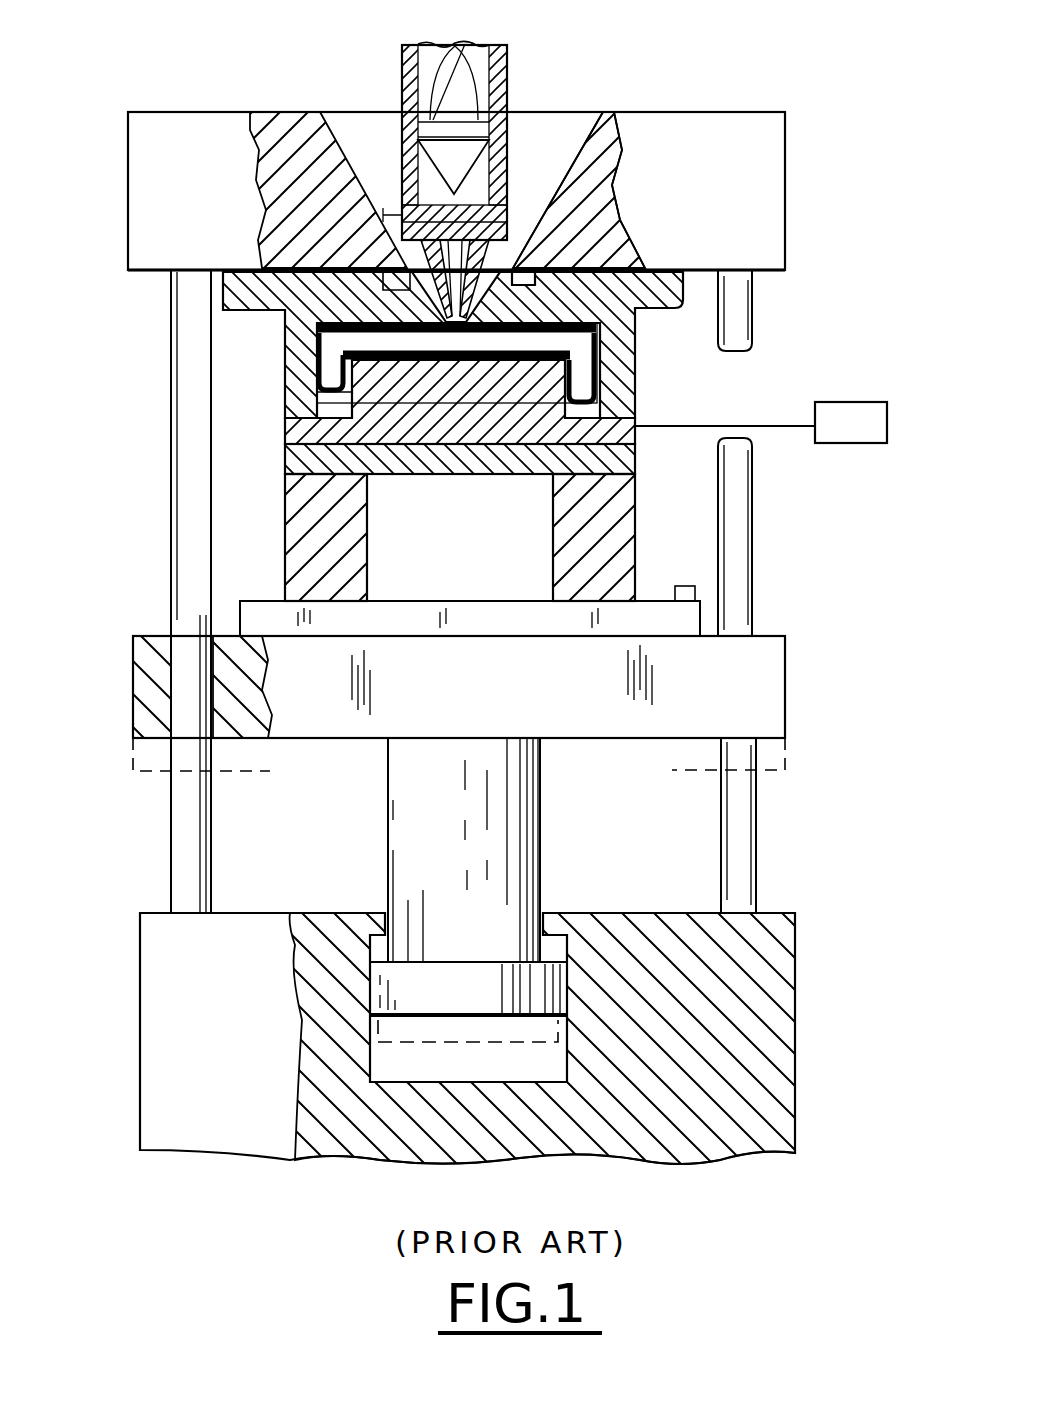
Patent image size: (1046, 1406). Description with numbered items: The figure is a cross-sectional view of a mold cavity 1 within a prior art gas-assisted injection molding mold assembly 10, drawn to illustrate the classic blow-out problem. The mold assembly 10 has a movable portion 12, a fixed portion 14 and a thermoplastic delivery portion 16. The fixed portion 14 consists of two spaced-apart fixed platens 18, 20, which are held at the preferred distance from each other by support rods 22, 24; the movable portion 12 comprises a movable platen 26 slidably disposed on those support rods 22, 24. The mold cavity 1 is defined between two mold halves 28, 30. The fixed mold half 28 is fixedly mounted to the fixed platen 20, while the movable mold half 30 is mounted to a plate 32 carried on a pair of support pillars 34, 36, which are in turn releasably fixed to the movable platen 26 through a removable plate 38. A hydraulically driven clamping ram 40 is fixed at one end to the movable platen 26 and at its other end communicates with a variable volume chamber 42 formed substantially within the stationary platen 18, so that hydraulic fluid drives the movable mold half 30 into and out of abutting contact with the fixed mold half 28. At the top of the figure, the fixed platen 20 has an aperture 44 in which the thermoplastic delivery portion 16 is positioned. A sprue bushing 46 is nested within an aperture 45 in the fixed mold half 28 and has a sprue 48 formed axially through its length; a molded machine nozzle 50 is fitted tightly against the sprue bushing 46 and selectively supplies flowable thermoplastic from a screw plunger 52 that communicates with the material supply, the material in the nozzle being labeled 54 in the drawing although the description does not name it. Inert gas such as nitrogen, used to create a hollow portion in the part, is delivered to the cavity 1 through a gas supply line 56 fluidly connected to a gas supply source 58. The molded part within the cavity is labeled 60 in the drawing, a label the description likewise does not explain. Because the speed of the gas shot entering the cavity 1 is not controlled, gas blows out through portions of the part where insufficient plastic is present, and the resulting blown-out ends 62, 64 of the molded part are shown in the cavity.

The mold cavity 1 is at (652, 363).
The mold assembly 10 is at (112, 541).
The movable portion 12 is at (775, 690).
The fixed portion 14 is at (775, 190).
The thermoplastic delivery portion 16 is at (512, 72).
The fixed platen 18 is at (778, 950).
The fixed platen 20 is at (775, 135).
The support rod 22 is at (176, 801).
The support rod 24 is at (760, 790).
The movable platen 26 is at (790, 646).
The fixed mold half 28 is at (292, 346).
The movable mold half 30 is at (292, 430).
The plate 32 is at (622, 458).
The support pillar 34 is at (357, 514).
The support pillar 36 is at (553, 525).
The removable plate 38 is at (642, 608).
The hydraulically driven clamping ram 40 is at (515, 822).
The variable volume chamber 42 is at (422, 1063).
The aperture 44 is at (598, 140).
The aperture 45 is at (402, 290).
The sprue bushing 46 is at (415, 292).
The sprue 48 is at (497, 265).
The molded machine nozzle 50 is at (490, 258).
The screw plunger 52 is at (458, 72).
The pressurized fluid 54 is at (447, 46).
The gas supply line 56 is at (780, 426).
The gas supply source 58 is at (848, 402).
The upper sheet 60 is at (598, 360).
The blown-out end 62 is at (340, 397).
The blown-out end 64 is at (588, 404).